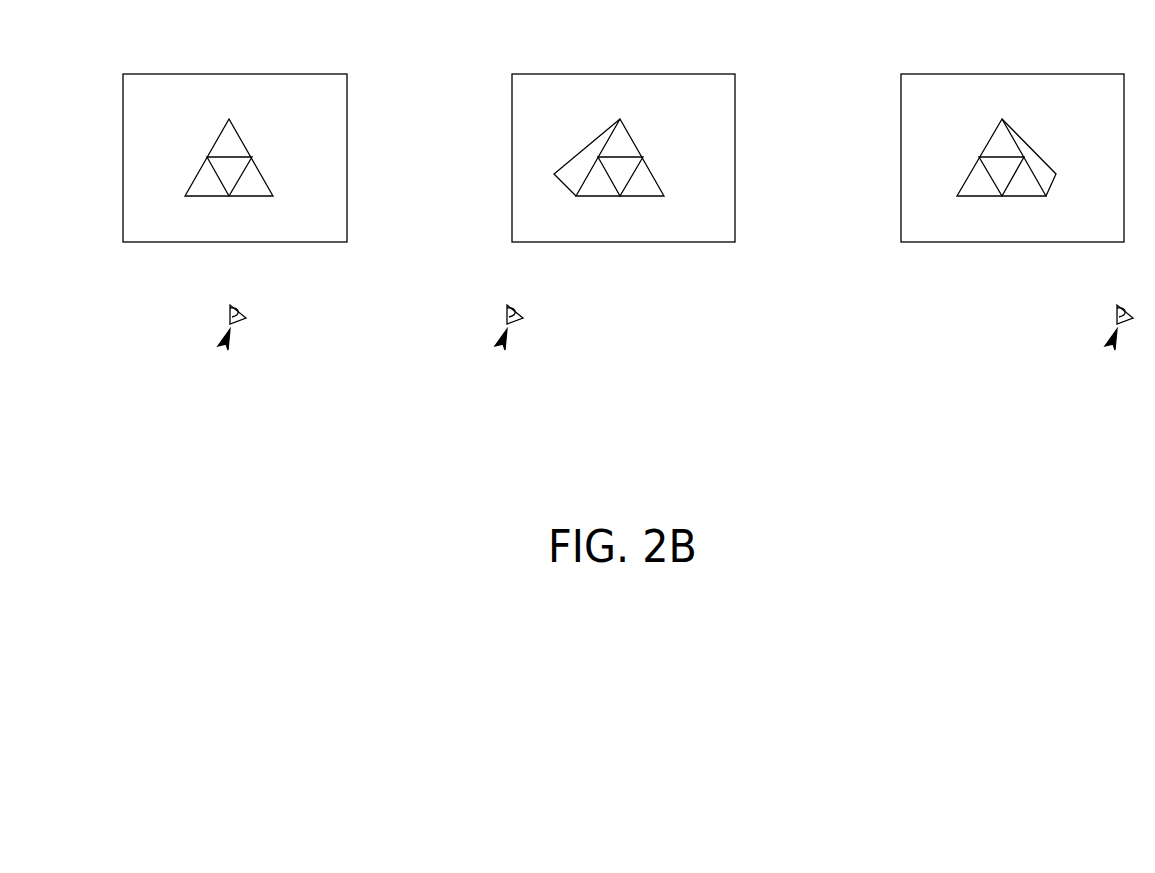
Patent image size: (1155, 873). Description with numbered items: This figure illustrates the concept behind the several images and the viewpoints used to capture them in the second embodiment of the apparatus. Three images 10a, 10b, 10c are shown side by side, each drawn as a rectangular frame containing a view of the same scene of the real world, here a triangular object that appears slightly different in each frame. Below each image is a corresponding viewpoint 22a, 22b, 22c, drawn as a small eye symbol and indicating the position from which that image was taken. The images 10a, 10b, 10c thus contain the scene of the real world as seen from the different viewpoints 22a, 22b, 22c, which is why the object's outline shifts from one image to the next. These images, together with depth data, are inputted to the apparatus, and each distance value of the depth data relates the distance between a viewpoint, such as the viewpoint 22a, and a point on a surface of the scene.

The image 10a is at (234, 73).
The image 10b is at (623, 73).
The image 10c is at (1013, 73).
The viewpoint 22a is at (226, 352).
The viewpoint 22b is at (503, 352).
The viewpoint 22c is at (1113, 352).